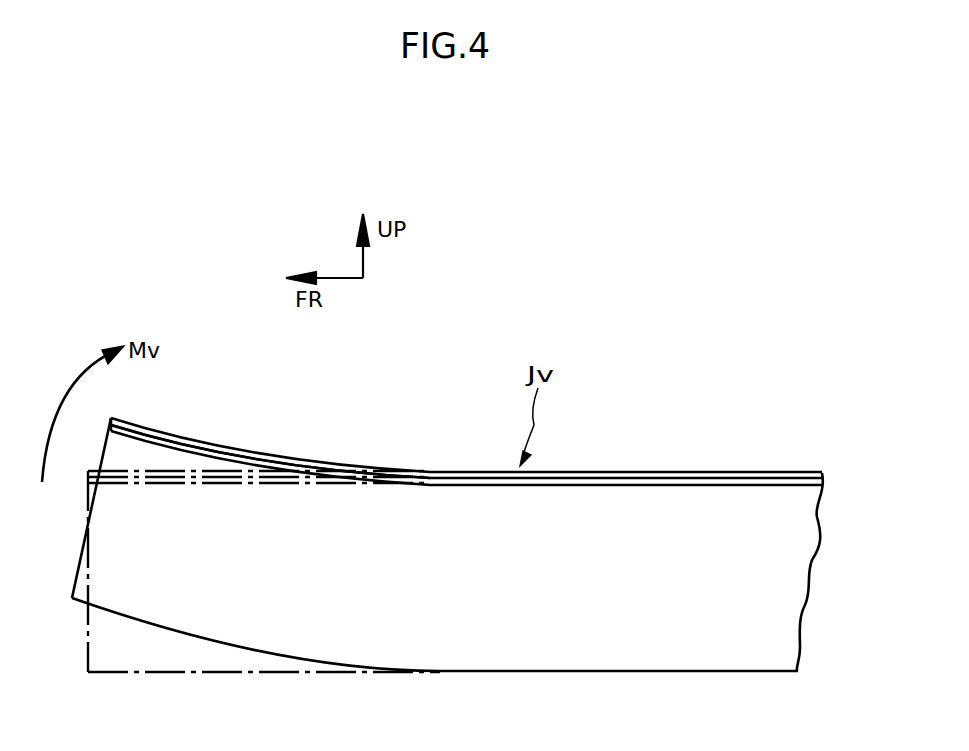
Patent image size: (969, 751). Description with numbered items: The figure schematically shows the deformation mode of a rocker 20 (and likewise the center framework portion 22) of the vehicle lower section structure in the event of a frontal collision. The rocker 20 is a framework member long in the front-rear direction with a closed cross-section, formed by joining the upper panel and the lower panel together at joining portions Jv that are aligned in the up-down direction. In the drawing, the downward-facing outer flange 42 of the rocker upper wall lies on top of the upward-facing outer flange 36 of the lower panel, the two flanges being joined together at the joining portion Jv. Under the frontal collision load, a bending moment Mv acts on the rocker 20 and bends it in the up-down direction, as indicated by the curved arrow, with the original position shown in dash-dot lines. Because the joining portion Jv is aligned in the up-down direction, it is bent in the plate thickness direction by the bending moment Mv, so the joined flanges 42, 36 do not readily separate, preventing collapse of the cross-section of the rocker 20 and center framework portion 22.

The rocker 20 is at (648, 452).
The center framework portion 22 is at (661, 435).
The outer flange 36 is at (722, 488).
The outer flange 42 is at (775, 473).